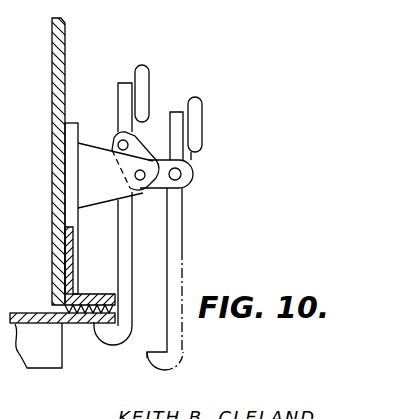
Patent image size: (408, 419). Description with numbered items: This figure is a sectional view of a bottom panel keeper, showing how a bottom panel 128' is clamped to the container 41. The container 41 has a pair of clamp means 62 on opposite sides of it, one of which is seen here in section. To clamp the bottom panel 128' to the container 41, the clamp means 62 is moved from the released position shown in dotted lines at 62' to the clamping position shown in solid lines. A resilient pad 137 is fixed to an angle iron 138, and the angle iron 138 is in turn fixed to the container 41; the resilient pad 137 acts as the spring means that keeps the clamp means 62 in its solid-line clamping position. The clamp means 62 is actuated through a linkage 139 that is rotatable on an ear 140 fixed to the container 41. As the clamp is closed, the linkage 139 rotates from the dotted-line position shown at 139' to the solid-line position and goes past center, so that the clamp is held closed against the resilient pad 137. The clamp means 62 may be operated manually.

The container 41 is at (70, 42).
The clamp means 62 is at (122, 193).
The clamp means in dotted-line position 62' is at (193, 233).
The linkage 139 is at (160, 161).
The linkage in released position 139' is at (208, 155).
The ear 140 is at (90, 153).
The angle iron 138 is at (69, 238).
The resilient pad 137 is at (88, 294).
The bottom panel 128' is at (71, 347).